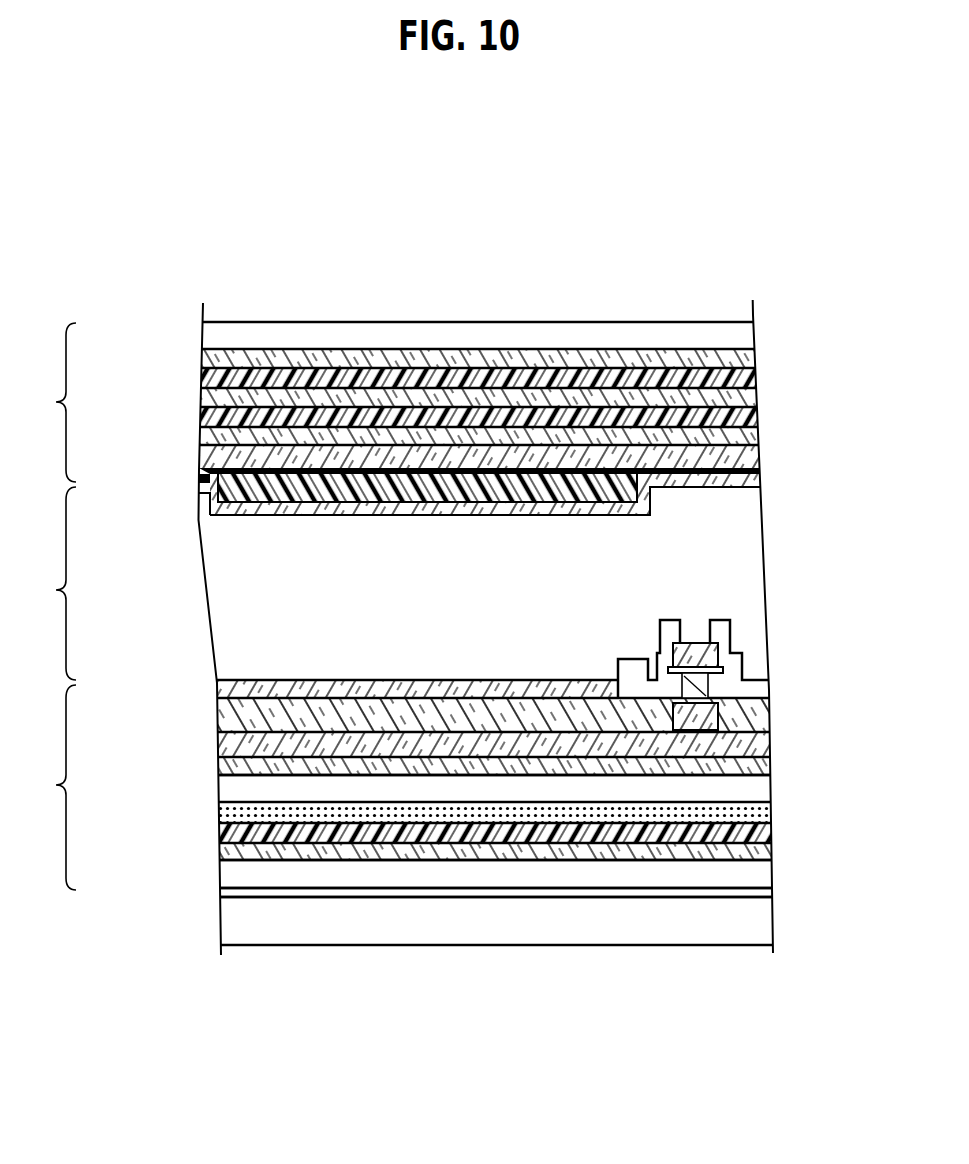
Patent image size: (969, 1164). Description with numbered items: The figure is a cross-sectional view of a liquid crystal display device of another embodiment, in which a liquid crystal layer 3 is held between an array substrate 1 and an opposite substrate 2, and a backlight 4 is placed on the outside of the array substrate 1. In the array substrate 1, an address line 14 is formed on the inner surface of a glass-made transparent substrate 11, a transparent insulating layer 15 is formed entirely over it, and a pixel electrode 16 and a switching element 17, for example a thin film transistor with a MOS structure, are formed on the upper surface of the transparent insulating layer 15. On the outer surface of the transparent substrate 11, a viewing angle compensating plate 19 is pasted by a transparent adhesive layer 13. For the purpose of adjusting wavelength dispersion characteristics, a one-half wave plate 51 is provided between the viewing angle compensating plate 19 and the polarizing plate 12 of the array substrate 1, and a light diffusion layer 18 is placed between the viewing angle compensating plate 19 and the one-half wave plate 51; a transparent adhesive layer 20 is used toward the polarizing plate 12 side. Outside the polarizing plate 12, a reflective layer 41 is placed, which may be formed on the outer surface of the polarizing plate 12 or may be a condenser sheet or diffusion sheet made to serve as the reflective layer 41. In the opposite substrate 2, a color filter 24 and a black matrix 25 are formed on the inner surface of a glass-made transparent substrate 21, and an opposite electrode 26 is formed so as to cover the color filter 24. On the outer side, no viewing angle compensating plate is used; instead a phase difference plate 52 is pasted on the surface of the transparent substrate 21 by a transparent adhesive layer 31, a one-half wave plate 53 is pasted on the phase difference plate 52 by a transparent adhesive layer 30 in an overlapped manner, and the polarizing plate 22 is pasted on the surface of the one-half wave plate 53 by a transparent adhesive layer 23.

The array substrate 1 is at (47, 787).
The opposite substrate 2 is at (47, 402).
The liquid crystal layer 3 is at (47, 583).
The backlight 4 is at (245, 925).
The transparent substrate 11 is at (240, 745).
The polarizing plate 12 is at (240, 873).
The transparent adhesive layer 13 is at (770, 760).
The address line 14 is at (718, 712).
The transparent insulating layer 15 is at (228, 712).
The pixel electrode 16 is at (245, 680).
The switching element 17 is at (718, 650).
The light diffusion layer 18 is at (772, 808).
The viewing angle compensating plate 19 is at (763, 783).
The transparent adhesive layer 20 is at (765, 847).
The transparent substrate 21 is at (350, 445).
The polarizing plate 22 is at (210, 335).
The transparent adhesive layer 23 is at (752, 355).
The color filter 24 is at (566, 470).
The black matrix 25 is at (688, 475).
The opposite electrode 26 is at (455, 495).
The transparent adhesive layer 30 is at (755, 396).
The transparent adhesive layer 31 is at (757, 434).
The reflective layer 41 is at (773, 891).
The ½ wave plate 51 is at (232, 830).
The phase difference plate 52 is at (205, 427).
The ½ wave plate 53 is at (205, 380).